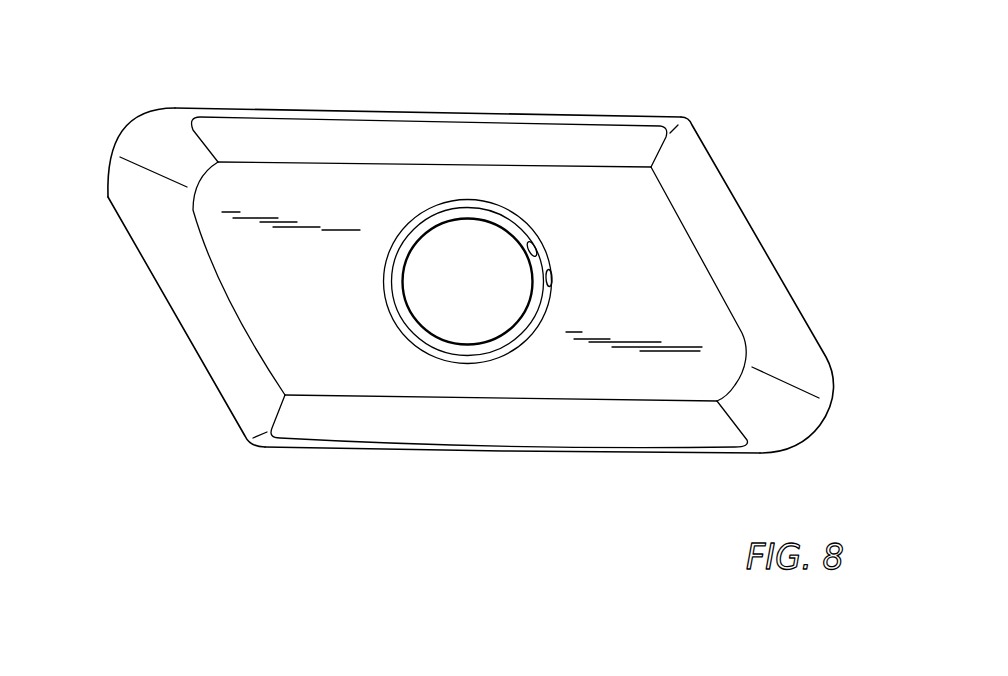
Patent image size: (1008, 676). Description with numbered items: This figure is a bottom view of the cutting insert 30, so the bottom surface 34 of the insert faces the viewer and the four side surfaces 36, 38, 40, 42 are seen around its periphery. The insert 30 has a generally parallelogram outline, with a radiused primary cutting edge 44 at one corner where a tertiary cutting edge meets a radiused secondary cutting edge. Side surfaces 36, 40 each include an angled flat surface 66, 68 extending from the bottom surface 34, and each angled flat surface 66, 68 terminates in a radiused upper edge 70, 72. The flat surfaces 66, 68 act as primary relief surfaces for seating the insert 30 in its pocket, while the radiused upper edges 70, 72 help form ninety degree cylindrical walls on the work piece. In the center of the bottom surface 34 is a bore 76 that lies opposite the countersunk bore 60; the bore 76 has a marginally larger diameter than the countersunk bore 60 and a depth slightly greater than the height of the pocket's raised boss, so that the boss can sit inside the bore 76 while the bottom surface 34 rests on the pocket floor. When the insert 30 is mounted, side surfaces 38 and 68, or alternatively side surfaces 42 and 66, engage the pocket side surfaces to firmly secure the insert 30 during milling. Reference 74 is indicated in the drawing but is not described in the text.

The cutting insert 30 is at (458, 268).
The bottom surface 34 is at (307, 183).
The side surface 36 is at (403, 135).
The side surface 38 is at (752, 263).
The side surface 40 is at (455, 433).
The side surface 42 is at (200, 318).
The radiused primary cutting edge 44 is at (110, 145).
The countersunk bore 60 is at (490, 222).
The angled flat surface 66 is at (445, 130).
The angled flat surface 68 is at (576, 427).
The radiused upper edge 70 is at (205, 110).
The radiused upper edge 72 is at (343, 447).
The recess 74 is at (554, 292).
The bore 76 is at (538, 257).